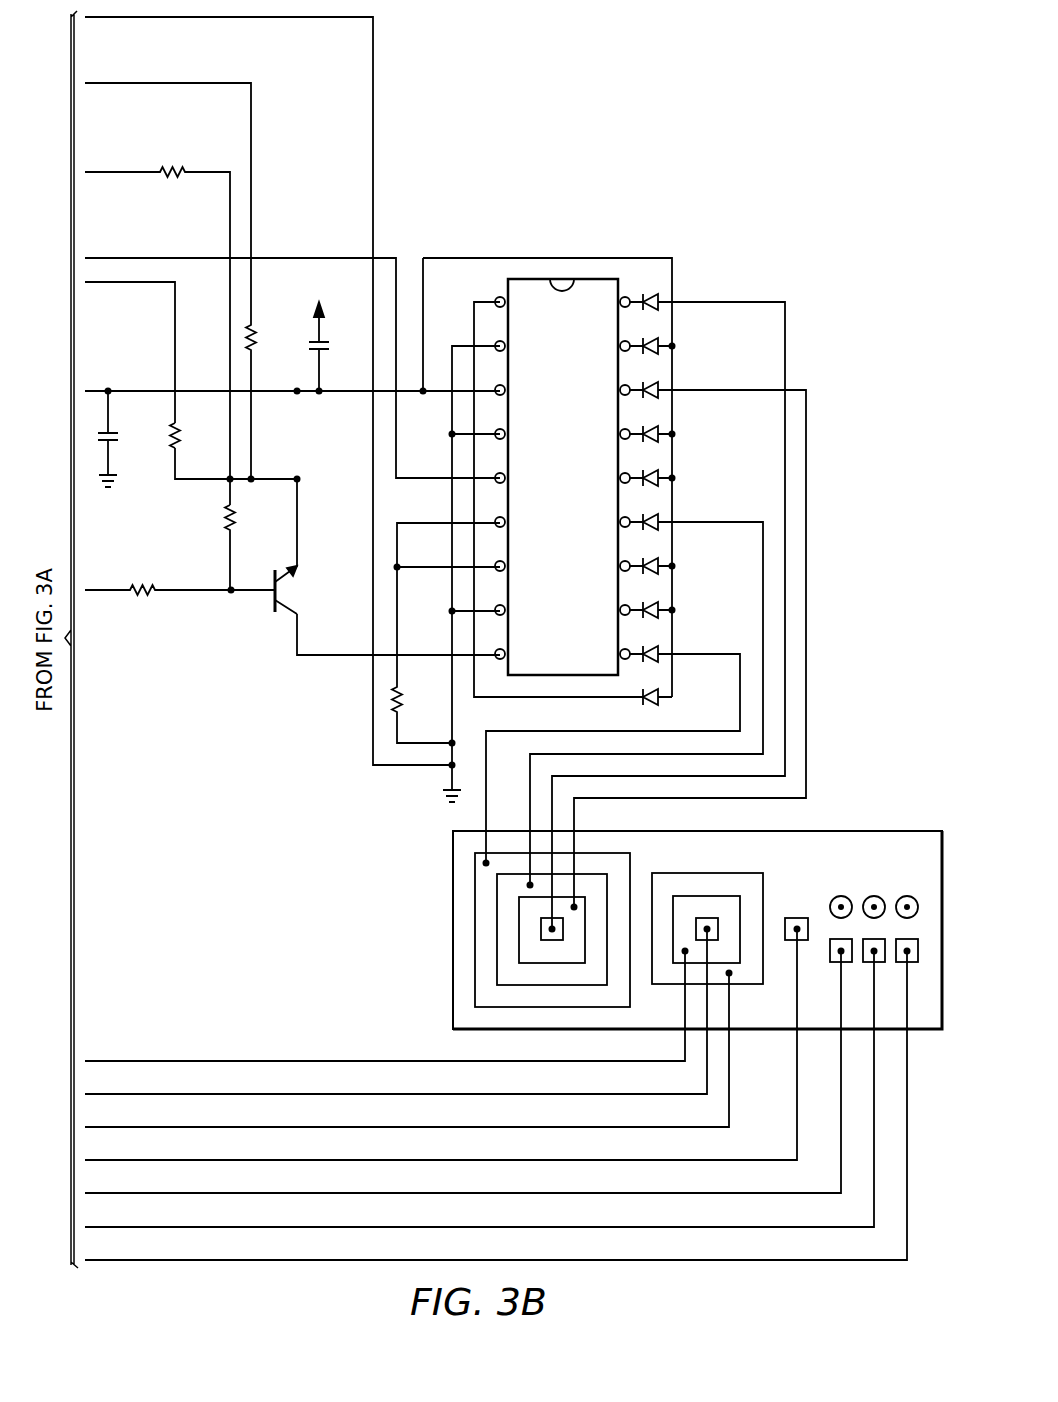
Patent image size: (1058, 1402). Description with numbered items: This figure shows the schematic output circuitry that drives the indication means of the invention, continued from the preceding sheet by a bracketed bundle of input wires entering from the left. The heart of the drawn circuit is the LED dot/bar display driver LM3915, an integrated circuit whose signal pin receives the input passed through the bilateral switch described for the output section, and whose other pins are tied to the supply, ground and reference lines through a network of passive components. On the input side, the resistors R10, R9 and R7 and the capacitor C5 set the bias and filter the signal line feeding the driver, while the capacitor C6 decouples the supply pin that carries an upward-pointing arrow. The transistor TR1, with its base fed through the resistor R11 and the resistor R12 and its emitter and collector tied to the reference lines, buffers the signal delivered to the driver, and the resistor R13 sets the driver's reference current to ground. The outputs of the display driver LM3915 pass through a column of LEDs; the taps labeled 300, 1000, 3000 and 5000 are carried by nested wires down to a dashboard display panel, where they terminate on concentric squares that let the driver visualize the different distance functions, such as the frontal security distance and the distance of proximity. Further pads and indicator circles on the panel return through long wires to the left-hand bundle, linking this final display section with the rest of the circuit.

The resistor R10 is at (157, 324).
The resistor R9 is at (186, 281).
The resistor R7 is at (190, 437).
The capacitor C5 is at (123, 439).
The capacitor C6 is at (333, 346).
The resistor R12 is at (251, 547).
The resistor R11 is at (180, 579).
The transistor TR1 is at (288, 562).
The resistor R13 is at (446, 633).
The display driver LM3915 is at (562, 477).
The 300 output line to display 300 is at (668, 604).
The 1000 output line to display 1000 is at (690, 636).
The 3000 output line to display 3000 is at (646, 691).
The 5000 output line to display 5000 is at (613, 746).